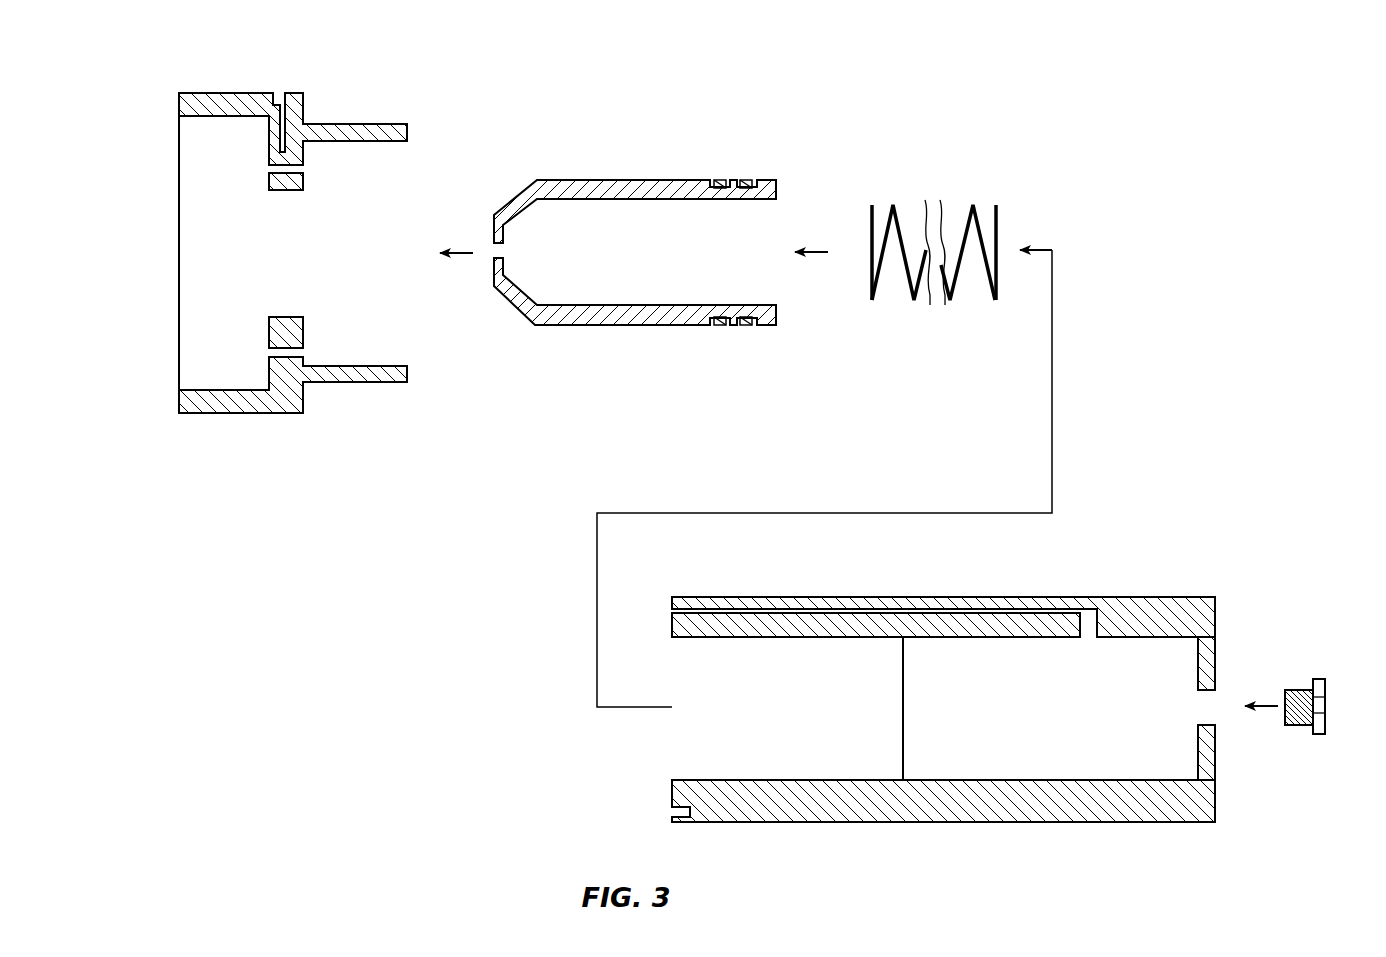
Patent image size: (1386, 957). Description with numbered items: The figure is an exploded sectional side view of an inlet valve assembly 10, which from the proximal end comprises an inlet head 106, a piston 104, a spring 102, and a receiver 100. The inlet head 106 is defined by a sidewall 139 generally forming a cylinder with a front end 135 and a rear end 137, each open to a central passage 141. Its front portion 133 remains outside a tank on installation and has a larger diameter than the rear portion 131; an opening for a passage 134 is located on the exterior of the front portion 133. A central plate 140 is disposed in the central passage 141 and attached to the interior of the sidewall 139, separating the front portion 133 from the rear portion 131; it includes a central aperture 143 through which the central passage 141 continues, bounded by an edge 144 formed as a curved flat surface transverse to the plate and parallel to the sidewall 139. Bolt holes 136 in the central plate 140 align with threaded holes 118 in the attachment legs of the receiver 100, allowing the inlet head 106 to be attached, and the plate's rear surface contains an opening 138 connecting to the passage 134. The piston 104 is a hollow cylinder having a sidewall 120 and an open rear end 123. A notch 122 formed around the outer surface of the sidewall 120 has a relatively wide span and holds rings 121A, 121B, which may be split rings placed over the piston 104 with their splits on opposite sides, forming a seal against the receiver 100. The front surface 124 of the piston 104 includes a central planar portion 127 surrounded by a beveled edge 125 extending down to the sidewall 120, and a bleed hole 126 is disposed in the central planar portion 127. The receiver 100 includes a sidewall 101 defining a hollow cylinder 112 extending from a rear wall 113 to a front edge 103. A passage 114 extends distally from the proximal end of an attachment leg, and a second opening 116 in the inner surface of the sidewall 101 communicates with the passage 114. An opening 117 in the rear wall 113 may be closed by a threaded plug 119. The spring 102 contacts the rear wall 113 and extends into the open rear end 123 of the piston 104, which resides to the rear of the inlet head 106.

The inlet valve assembly 10 is at (316, 805).
The receiver 100 is at (937, 708).
The sidewall 101 is at (930, 706).
The spring 102 is at (871, 302).
The front edge 103 is at (903, 672).
The piston 104 is at (631, 257).
The inlet head 106 is at (240, 403).
The hollow cylinder 112 is at (878, 750).
The rear wall 113 is at (1210, 755).
The passage 114 is at (830, 608).
The second opening 116 is at (1100, 625).
The opening 117 is at (1222, 694).
The threaded hole 118 is at (672, 808).
The threaded plug 119 is at (1325, 683).
The sidewall 120 is at (675, 312).
The ring 121A is at (716, 178).
The ring 121B is at (747, 178).
The notch 122 is at (757, 341).
The open rear end 123 is at (793, 299).
The front surface 124 is at (496, 306).
The beveled edge 125 is at (505, 212).
The bleed hole 126 is at (483, 245).
The central planar portion 127 is at (494, 222).
The rear portion 131 is at (308, 80).
The front portion 133 is at (179, 458).
The passage 134 is at (287, 98).
The front end 135 is at (284, 268).
The bolt hole 136 is at (260, 352).
The rear end 137 is at (426, 350).
The opening 138 is at (303, 171).
The sidewall 139 is at (287, 397).
The central plate 140 is at (272, 325).
The central passage 141 is at (166, 240).
The central aperture 143 is at (273, 228).
The edge 144 is at (270, 192).